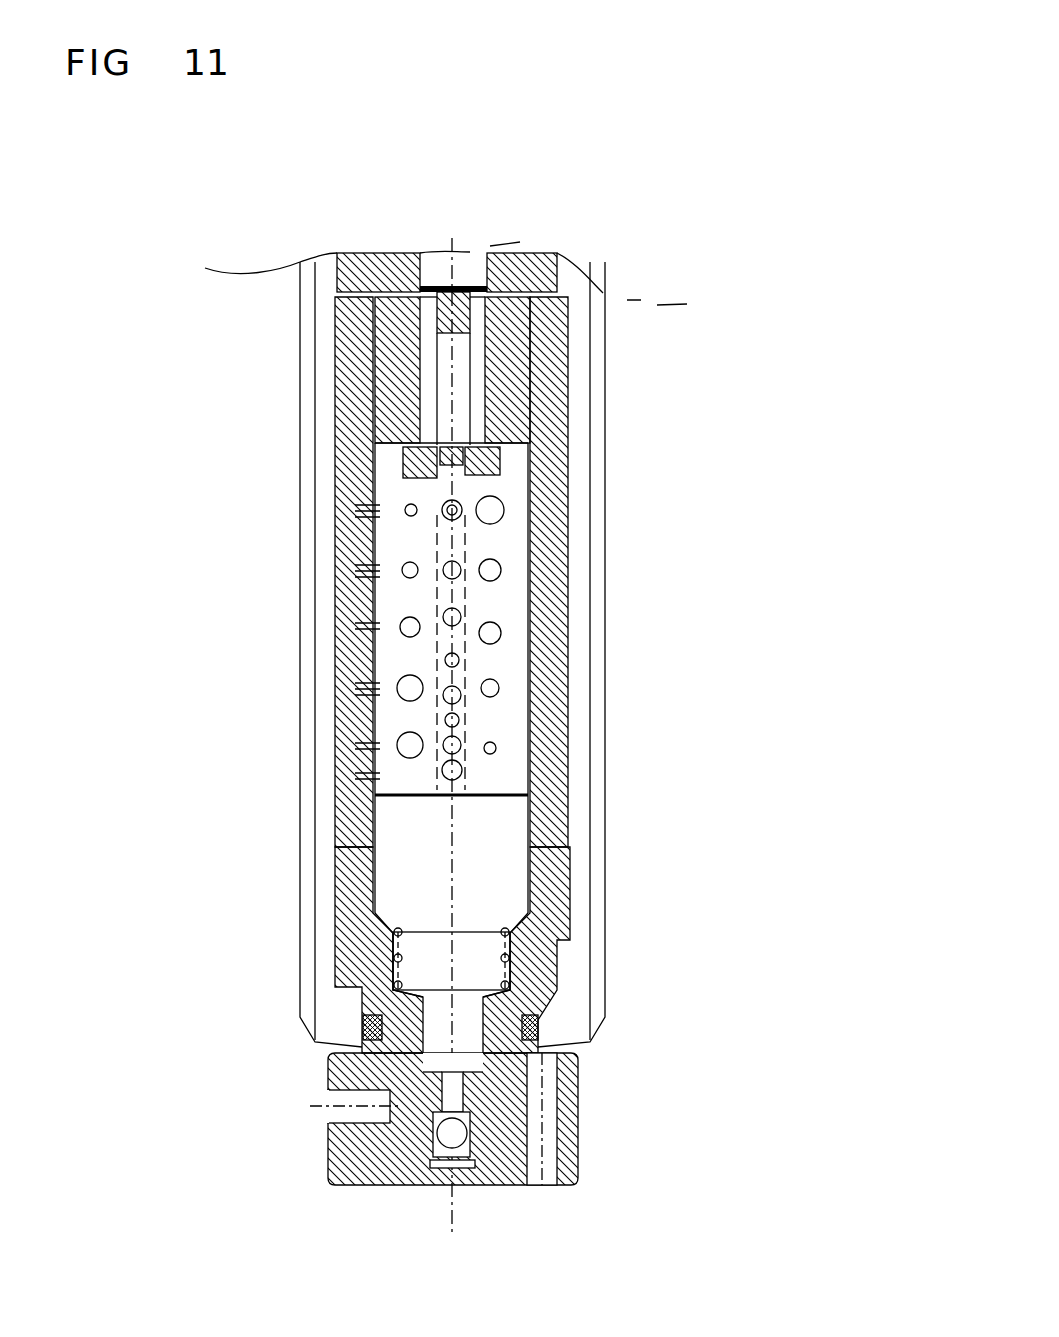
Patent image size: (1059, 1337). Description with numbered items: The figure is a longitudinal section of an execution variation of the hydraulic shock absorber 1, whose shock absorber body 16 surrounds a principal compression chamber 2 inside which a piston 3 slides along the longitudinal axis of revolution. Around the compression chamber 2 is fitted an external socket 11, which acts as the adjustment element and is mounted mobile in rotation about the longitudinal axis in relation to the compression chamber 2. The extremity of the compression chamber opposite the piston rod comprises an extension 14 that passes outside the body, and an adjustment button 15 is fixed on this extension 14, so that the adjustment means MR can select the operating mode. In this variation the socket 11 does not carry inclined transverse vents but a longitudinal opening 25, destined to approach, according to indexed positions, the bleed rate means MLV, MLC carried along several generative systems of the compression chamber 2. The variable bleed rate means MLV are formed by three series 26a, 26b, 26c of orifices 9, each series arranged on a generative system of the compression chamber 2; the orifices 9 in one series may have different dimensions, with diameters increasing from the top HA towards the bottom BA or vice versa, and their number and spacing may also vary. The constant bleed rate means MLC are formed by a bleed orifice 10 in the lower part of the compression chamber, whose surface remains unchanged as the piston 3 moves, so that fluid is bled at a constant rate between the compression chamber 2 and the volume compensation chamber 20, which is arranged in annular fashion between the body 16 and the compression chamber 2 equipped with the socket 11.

The shock absorber 1 is at (702, 84).
The principal compression chamber 2 is at (528, 476).
The piston 3 is at (507, 387).
The orifices 9 is at (501, 575).
The bleed orifice 10 is at (532, 750).
The external socket 11 is at (557, 541).
The extension 14 is at (560, 1137).
The adjustment button 15 is at (344, 1141).
The shock absorber body 16 is at (595, 960).
The volume compensation chamber 20 is at (558, 313).
The longitudinal opening 25 is at (464, 776).
The first series of orifices 26a is at (497, 490).
The second series of orifices 26b is at (411, 496).
The third series of orifices 26c is at (450, 496).
The variable bleed rate means MLV is at (455, 497).
The constant bleed rate means MLC is at (748, 668).
The adjustment means MR is at (286, 1121).
The top HA is at (52, 211).
The bottom BA is at (71, 1221).